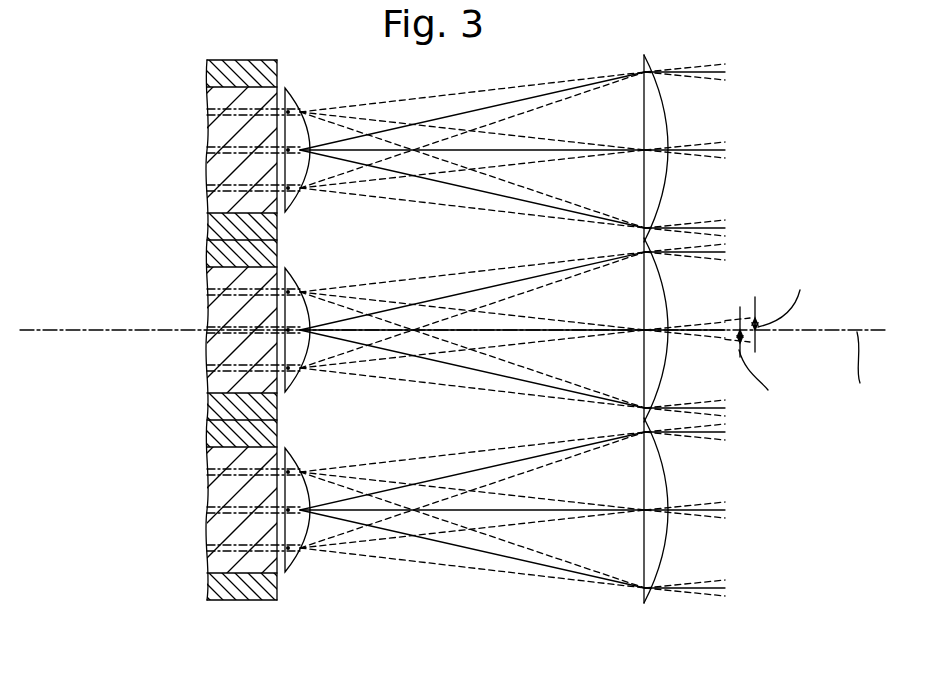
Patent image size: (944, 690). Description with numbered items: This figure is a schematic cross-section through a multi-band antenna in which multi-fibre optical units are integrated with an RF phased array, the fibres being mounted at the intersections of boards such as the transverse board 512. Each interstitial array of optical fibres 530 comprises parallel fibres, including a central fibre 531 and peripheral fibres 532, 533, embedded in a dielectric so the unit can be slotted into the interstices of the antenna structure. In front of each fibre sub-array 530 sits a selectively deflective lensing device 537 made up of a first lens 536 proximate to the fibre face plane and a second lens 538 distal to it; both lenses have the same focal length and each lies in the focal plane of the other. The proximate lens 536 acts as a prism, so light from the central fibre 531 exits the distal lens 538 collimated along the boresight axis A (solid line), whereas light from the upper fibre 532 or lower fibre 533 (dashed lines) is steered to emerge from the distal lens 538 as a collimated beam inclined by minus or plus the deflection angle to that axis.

The transverse board 512 is at (207, 226).
The interstitial array of optical fibres 530 is at (88, 406).
The central fibre 531 is at (205, 344).
The peripheral fibre 532 is at (207, 283).
The peripheral fibre 533 is at (205, 379).
The first lens 536 is at (301, 282).
The selectively deflective lensing device 537 is at (673, 608).
The second lens 538 is at (655, 298).